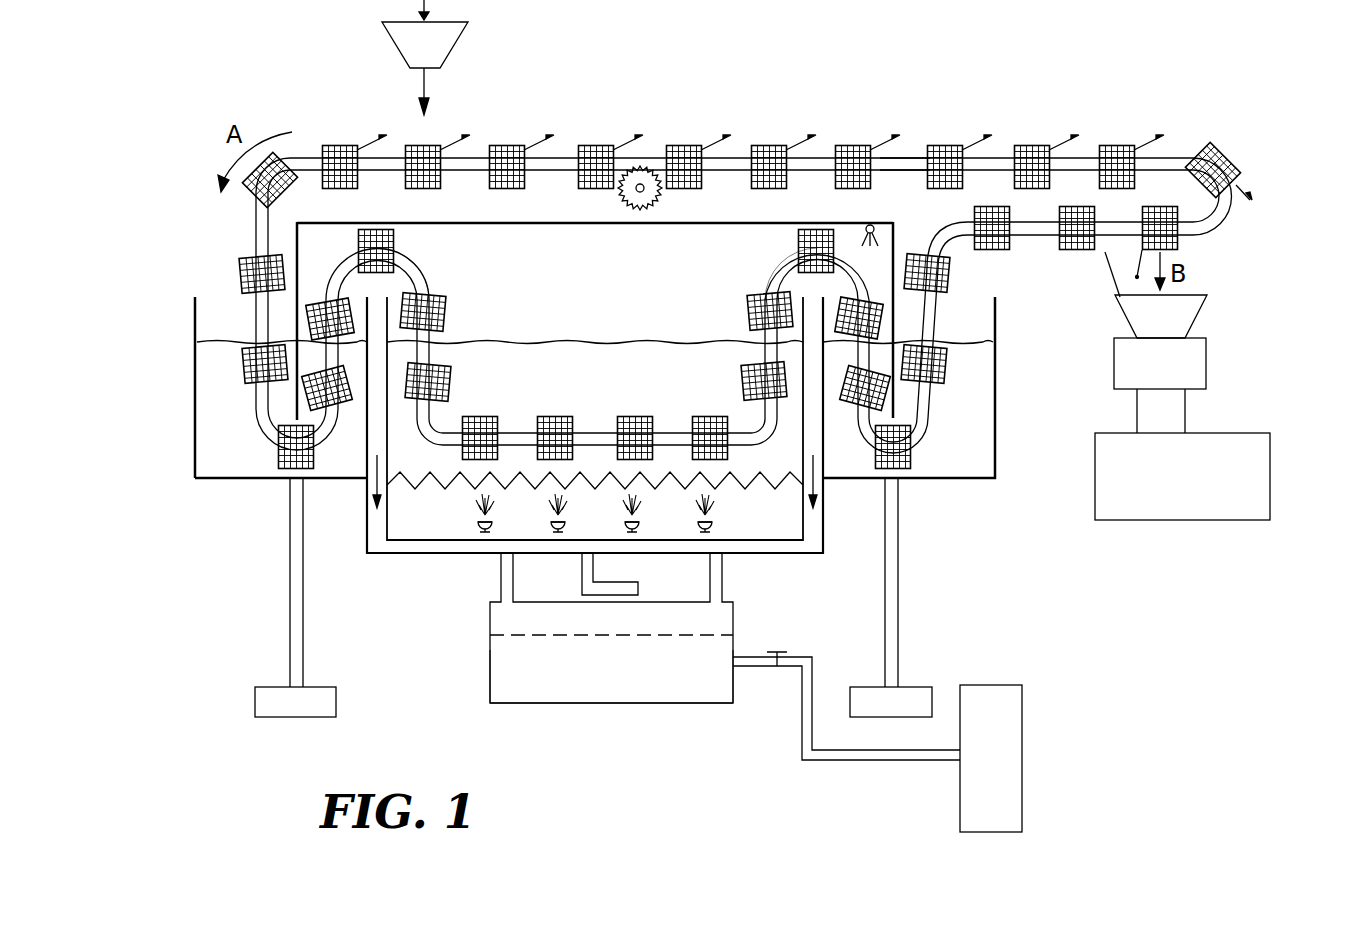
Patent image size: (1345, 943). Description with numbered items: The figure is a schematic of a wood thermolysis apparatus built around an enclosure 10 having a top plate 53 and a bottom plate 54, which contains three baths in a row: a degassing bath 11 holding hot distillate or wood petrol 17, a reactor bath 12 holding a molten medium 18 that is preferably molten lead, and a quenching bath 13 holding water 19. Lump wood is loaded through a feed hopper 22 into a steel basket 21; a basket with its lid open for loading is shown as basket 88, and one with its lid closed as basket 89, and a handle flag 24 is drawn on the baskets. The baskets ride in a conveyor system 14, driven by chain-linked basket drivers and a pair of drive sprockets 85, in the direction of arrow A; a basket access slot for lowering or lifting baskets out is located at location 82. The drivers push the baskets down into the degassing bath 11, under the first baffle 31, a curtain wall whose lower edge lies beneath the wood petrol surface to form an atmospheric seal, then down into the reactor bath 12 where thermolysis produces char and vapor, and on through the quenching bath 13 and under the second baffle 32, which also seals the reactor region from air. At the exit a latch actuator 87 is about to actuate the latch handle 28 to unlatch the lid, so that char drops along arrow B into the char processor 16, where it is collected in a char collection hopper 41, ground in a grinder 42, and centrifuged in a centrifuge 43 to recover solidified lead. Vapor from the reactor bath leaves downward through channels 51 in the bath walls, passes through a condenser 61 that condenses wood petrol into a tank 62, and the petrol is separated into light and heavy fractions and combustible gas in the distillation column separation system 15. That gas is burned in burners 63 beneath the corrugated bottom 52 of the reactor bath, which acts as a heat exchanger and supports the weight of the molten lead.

The enclosure 10 is at (195, 318).
The degassing bath 11 is at (195, 466).
The reactor bath 12 is at (387, 438).
The quenching bath 13 is at (970, 478).
The conveyor system 14 is at (735, 158).
The separation system 15 is at (1028, 731).
The char processor 16 is at (1199, 391).
The hot distillate (wood petrol) 17 is at (233, 456).
The molten medium 18 is at (608, 376).
The water 19 is at (980, 456).
The steel basket 21 is at (512, 145).
The feed hopper 22 is at (438, 57).
The basket handle flag 24 is at (524, 136).
The latch handle 28 is at (1092, 250).
The first baffle 31 is at (303, 258).
The second baffle 32 is at (896, 256).
The char collection hopper 41 is at (1174, 330).
The grinder 42 is at (1173, 382).
The centrifuge 43 is at (1174, 487).
The vapor exit channels 51 is at (372, 318).
The corrugated bottom 52 is at (524, 472).
The top plate 53 is at (505, 223).
The bottom plate 54 is at (262, 478).
The condenser 61 is at (490, 620).
The tank 62 is at (490, 672).
The burners 63 is at (478, 522).
The basket access slot location 82 is at (905, 158).
The drive sprockets 85 is at (642, 182).
The latch actuator 87 is at (1107, 272).
The basket with lid open 88 is at (408, 146).
The basket with lid closed 89 is at (335, 146).